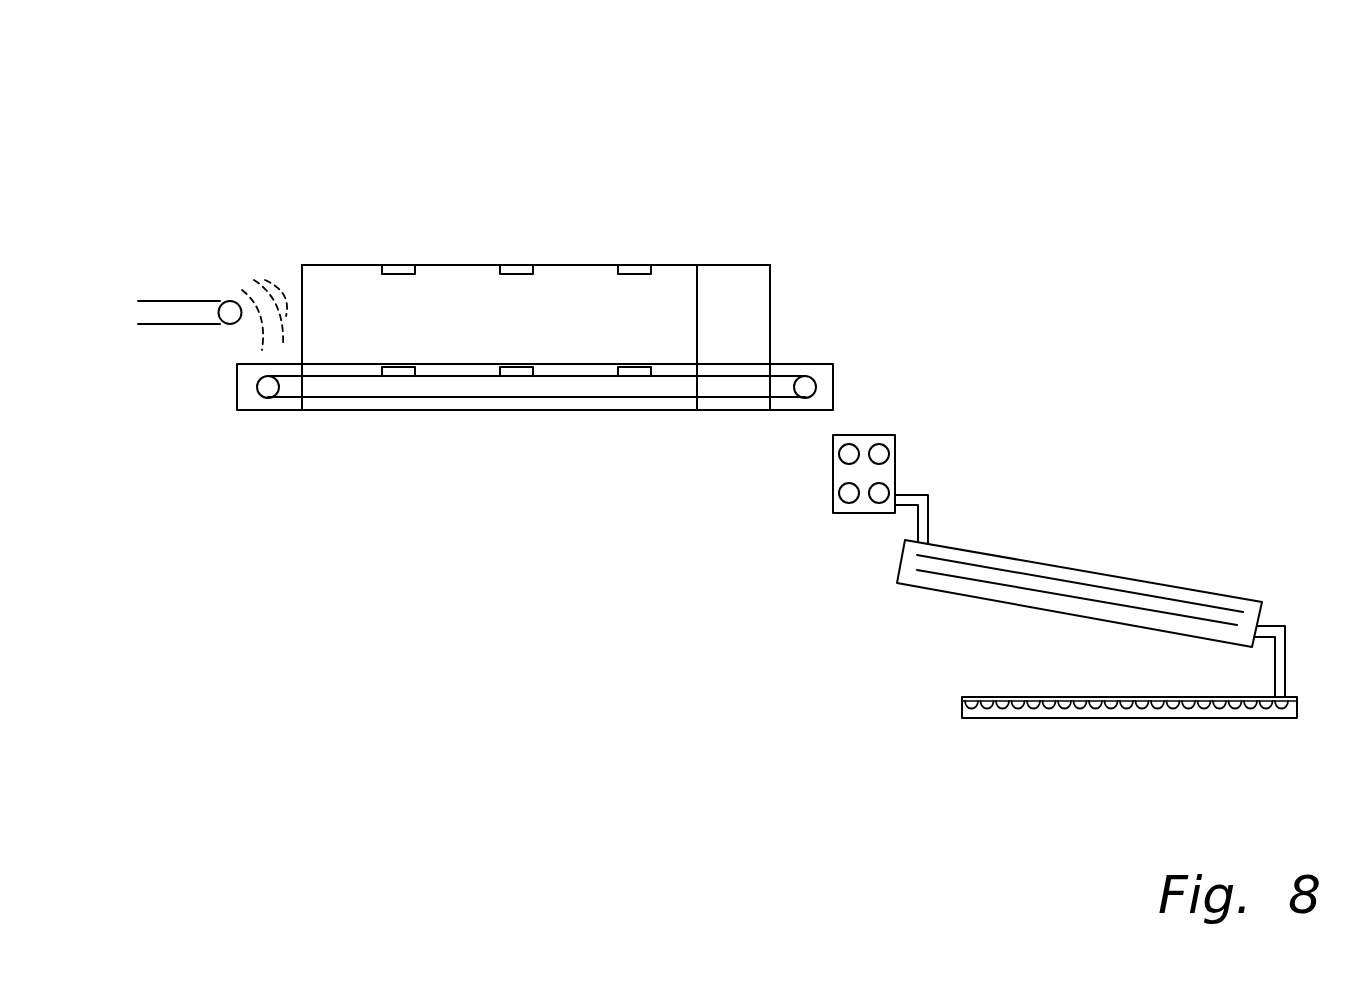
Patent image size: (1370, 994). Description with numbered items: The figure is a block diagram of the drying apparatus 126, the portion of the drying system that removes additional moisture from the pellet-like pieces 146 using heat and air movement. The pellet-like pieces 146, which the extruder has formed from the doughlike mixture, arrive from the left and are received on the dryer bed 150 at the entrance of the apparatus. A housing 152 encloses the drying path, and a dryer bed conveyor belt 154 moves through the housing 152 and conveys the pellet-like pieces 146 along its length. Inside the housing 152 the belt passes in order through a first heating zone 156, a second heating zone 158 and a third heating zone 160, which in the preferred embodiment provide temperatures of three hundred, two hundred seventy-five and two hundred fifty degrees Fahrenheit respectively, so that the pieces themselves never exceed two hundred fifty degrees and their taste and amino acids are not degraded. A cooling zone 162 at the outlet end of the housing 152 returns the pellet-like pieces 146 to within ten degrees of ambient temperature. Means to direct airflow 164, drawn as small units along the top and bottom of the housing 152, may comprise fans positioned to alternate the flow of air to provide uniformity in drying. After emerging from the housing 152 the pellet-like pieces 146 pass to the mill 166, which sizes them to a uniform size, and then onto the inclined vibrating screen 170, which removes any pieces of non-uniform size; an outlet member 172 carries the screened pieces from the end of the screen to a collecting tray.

The drying apparatus 126 is at (388, 98).
The pellet-like pieces 146 is at (248, 290).
The dryer bed 150 is at (284, 376).
The housing 152 is at (321, 265).
The dryer bed conveyor belt 154 is at (453, 392).
The heating zone 156 is at (335, 283).
The heating zone 158 is at (453, 283).
The heating zone 160 is at (570, 282).
The cooling zone 162 is at (737, 282).
The means to direct airflow 164 is at (393, 268).
The mill 166 is at (865, 433).
The vibrating screen 170 is at (1012, 557).
The outlet duct 172 is at (1288, 653).